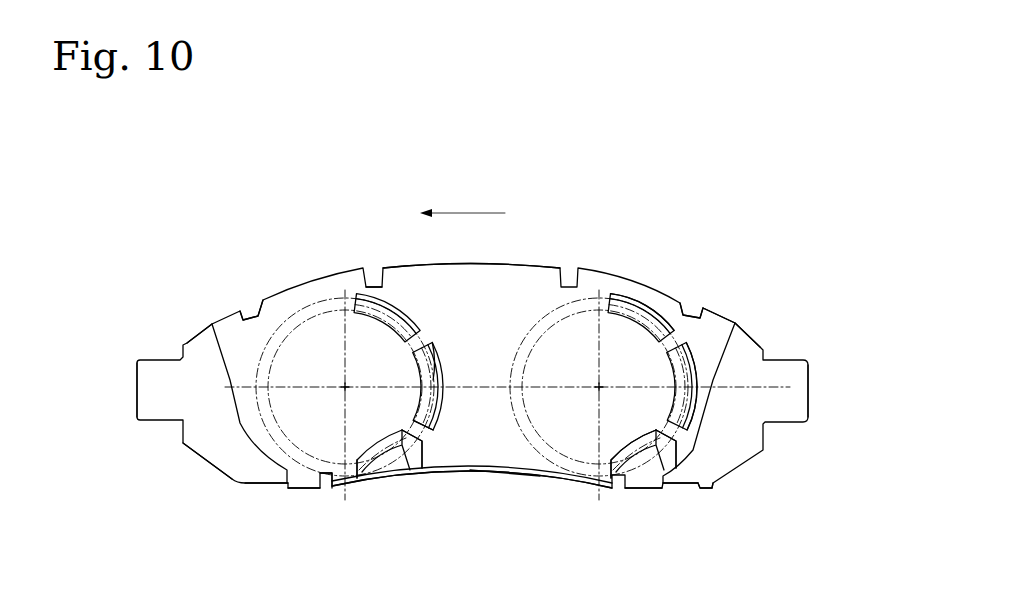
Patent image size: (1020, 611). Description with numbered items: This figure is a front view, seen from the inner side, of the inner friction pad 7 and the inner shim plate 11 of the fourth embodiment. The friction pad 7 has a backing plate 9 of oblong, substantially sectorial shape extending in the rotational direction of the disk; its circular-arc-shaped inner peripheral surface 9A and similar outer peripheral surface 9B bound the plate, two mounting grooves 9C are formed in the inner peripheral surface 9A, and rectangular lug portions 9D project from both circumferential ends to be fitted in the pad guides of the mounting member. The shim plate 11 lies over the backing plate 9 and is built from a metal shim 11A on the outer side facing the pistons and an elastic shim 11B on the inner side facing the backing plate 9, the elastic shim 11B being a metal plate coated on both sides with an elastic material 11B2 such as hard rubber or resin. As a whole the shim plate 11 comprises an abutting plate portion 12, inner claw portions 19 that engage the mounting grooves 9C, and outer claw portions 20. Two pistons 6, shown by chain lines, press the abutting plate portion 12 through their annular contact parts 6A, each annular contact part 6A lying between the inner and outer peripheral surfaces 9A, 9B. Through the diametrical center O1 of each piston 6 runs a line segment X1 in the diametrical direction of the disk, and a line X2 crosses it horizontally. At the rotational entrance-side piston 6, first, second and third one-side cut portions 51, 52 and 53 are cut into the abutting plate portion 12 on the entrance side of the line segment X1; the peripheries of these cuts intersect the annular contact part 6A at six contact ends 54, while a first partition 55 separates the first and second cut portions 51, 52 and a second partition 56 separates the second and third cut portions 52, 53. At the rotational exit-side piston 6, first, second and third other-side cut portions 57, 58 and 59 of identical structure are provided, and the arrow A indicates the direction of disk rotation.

The shim plate 11 is at (534, 267).
The abutting plate portion 12 is at (505, 285).
The piston 6 is at (297, 318).
The annular contact part 6A is at (323, 310).
The friction pad 7 is at (750, 336).
The backing plate 9 is at (198, 445).
The inner peripheral surface 9A is at (509, 483).
The outer peripheral surface 9B is at (250, 309).
The mounting groove 9C is at (262, 485).
The lug portion 9D is at (152, 368).
The inner claw portion 19 is at (304, 492).
The outer claw portion 20 is at (218, 318).
The metal shim 11A is at (524, 478).
The elastic shim 11B is at (716, 485).
The elastic material 11B2 is at (371, 488).
The first one-side cut portion 51 is at (655, 318).
The second one-side cut portion 52 is at (700, 410).
The third one-side cut portion 53 is at (660, 460).
The contact end 54 is at (360, 298).
The first partition 55 is at (428, 345).
The second partition 56 is at (420, 462).
The first other-side cut portion 57 is at (376, 288).
The second other-side cut portion 58 is at (430, 448).
The third other-side cut portion 59 is at (383, 460).
The diametrical center O1 is at (345, 387).
The line segment X1- X1 is at (474, 393).
The horizontal axis line X2 is at (490, 389).
The rotor rotation direction A is at (462, 203).